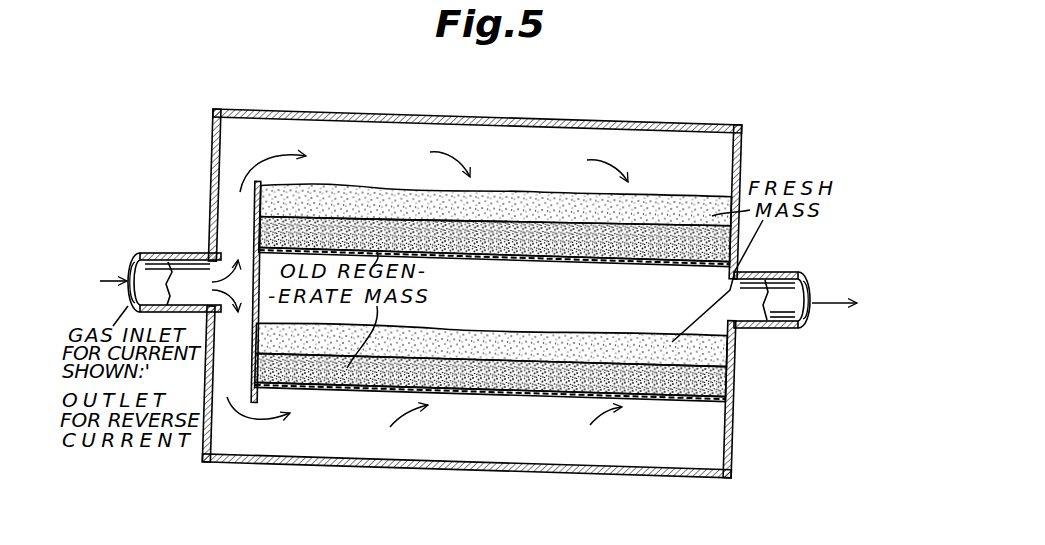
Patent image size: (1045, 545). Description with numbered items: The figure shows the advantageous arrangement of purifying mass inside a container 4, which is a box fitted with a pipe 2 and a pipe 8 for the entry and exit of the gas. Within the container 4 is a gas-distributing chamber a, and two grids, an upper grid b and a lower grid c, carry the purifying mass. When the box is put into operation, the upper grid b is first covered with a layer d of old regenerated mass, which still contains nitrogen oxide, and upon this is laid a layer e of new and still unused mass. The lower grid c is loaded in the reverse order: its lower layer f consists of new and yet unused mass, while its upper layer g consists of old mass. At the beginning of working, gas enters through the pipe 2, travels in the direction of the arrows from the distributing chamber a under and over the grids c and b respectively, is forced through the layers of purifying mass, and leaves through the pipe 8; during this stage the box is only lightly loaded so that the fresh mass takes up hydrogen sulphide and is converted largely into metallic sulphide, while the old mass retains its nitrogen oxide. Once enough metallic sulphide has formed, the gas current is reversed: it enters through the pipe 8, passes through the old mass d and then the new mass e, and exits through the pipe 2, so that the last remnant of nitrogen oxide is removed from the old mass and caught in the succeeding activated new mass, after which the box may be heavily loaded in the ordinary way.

The container 4 is at (278, 113).
The pipe 2 is at (180, 253).
The pipe 8 is at (750, 273).
The gas-distributing chamber a is at (233, 353).
The upper grid b is at (453, 252).
The lower grid c is at (657, 397).
The layer of old regenerated mass d is at (347, 237).
The layer of new mass e is at (493, 210).
The lower layer of new mass f is at (710, 382).
The upper layer of old mass g is at (702, 352).